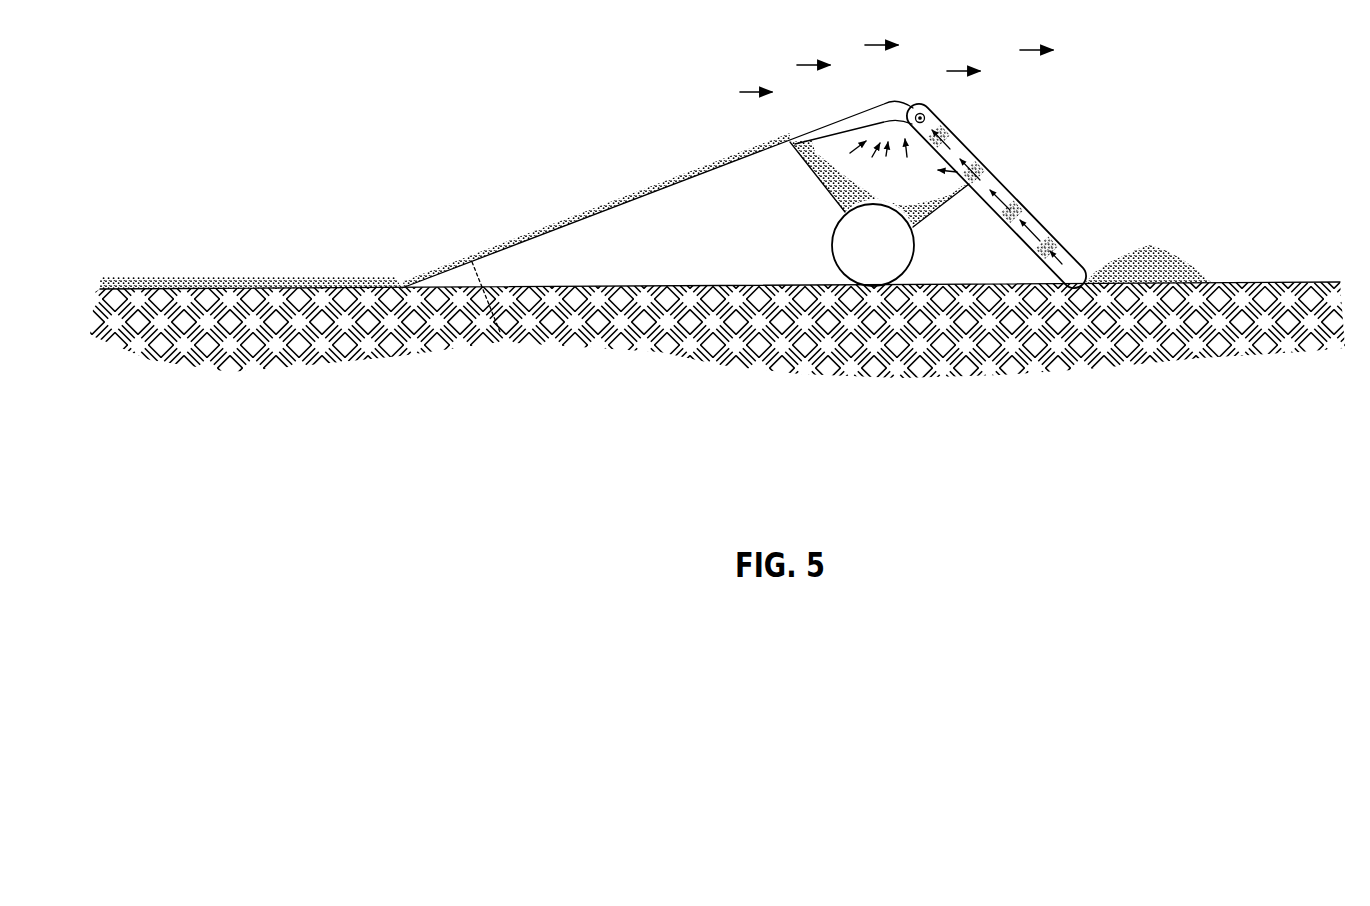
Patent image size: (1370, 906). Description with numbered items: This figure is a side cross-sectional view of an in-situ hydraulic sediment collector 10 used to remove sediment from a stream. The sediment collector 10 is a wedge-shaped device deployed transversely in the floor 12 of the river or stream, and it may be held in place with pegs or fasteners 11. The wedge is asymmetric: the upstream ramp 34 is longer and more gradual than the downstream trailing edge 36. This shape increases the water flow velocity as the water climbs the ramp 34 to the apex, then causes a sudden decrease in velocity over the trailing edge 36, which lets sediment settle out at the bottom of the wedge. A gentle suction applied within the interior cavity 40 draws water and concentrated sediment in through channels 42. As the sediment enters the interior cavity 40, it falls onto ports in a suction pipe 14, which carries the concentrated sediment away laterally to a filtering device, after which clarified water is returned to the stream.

The sediment collector 10 is at (1105, 118).
The pegs or fasteners 11 is at (478, 280).
The floor 12 is at (1277, 282).
The suction pipe 14 is at (873, 248).
The upstream ramp 34 is at (735, 160).
The trailing edge 36 is at (950, 132).
The interior cavity 40 is at (880, 135).
The channels 42 is at (1040, 220).